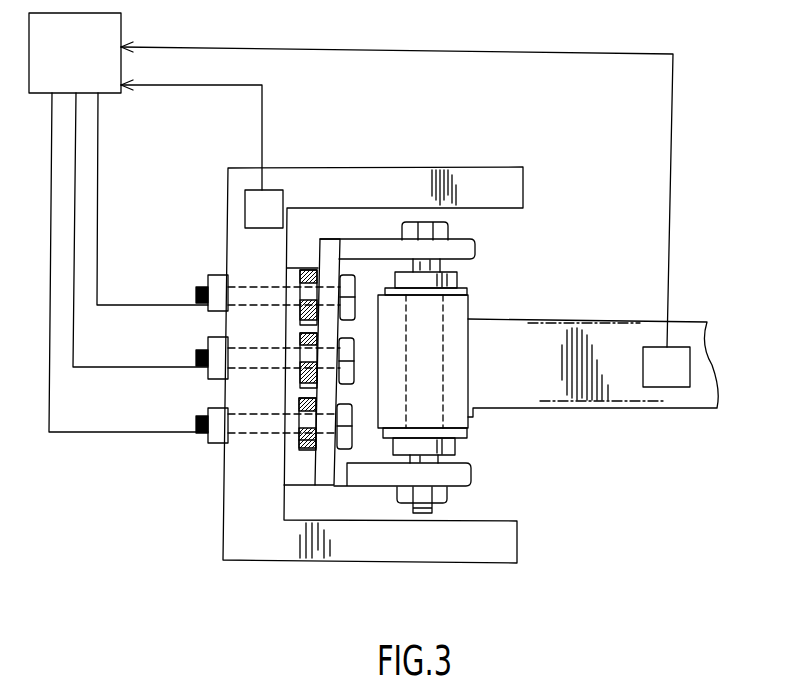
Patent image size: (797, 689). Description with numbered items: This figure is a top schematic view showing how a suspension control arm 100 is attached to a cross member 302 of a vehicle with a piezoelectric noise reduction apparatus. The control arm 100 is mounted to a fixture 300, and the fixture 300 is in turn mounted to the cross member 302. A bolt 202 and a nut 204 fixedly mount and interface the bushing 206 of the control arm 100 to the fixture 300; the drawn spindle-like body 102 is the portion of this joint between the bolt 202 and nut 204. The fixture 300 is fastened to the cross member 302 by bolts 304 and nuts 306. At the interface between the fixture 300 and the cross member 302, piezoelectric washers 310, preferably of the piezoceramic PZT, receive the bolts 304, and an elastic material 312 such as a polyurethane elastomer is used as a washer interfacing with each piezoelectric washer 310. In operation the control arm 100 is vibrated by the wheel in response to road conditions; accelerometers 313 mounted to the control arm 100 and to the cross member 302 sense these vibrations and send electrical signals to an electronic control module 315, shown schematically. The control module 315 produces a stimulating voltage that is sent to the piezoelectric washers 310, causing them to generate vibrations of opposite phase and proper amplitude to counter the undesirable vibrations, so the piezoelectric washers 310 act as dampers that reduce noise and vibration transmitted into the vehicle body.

The suspension control arm 100 is at (697, 409).
The spindle body 102 is at (477, 416).
The bolt 202 is at (452, 233).
The nut 204 is at (449, 495).
The bushing 206 is at (465, 290).
The fixture 300 is at (368, 440).
The cross member 302 is at (520, 550).
The bolts 304 is at (348, 275).
The nuts 306 is at (207, 320).
The piezoelectric washers 310 is at (297, 272).
The elastic material 312 is at (305, 450).
The accelerometers 313 is at (255, 210).
The electronic control module 315 is at (101, 67).